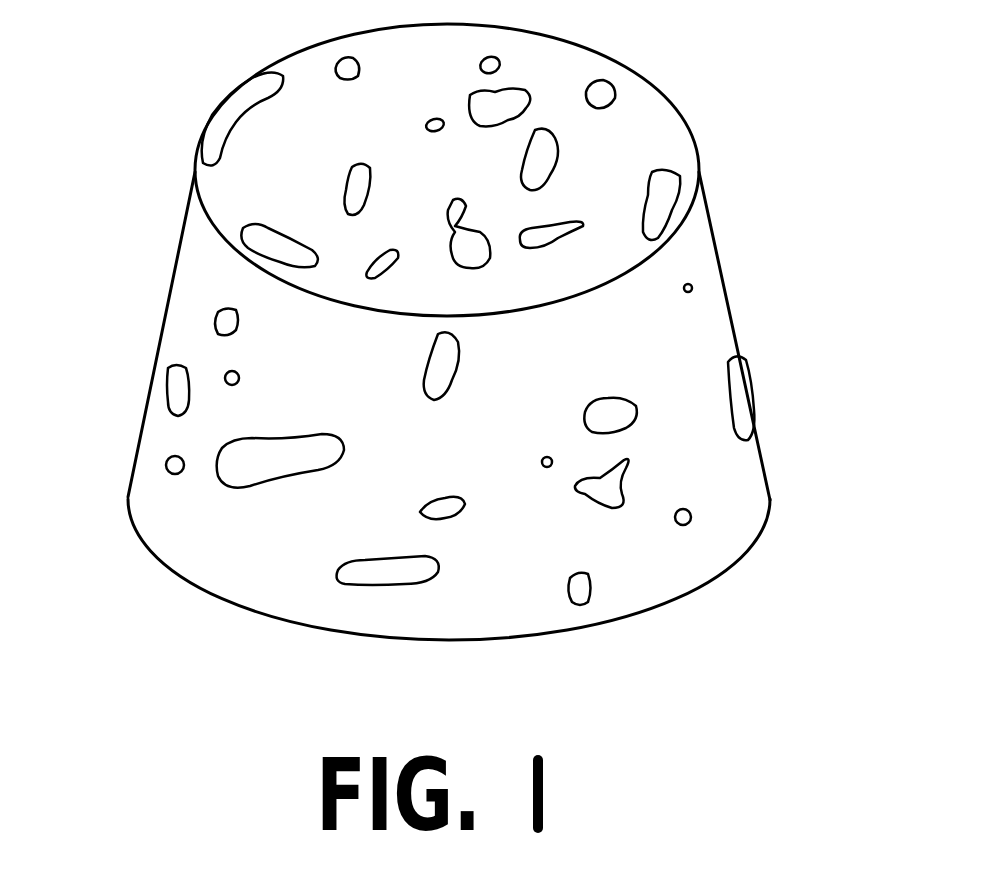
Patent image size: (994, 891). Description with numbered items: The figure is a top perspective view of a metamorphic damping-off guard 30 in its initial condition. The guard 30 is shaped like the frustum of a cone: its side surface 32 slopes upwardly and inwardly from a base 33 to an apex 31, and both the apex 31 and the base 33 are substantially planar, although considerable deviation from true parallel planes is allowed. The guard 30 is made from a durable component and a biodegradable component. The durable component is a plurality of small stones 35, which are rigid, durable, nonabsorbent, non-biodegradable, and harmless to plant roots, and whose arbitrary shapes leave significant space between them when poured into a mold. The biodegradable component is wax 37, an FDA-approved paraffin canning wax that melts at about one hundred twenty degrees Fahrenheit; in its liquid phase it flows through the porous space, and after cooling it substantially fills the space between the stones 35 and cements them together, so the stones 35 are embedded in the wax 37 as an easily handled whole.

The metamorphic damping-off guard 30 is at (625, 63).
The apex 31 is at (655, 140).
The side surface 32 is at (690, 257).
The base 33 is at (723, 570).
The stones 35 is at (247, 103).
The wax 37 is at (247, 192).